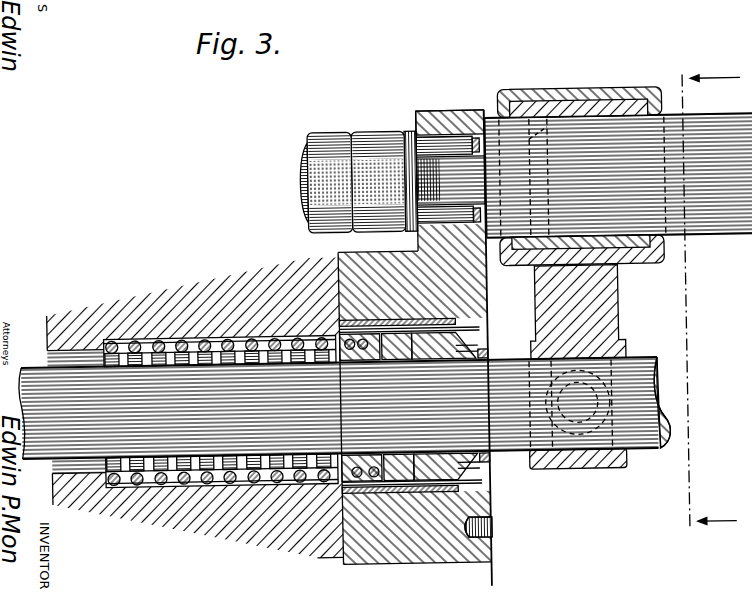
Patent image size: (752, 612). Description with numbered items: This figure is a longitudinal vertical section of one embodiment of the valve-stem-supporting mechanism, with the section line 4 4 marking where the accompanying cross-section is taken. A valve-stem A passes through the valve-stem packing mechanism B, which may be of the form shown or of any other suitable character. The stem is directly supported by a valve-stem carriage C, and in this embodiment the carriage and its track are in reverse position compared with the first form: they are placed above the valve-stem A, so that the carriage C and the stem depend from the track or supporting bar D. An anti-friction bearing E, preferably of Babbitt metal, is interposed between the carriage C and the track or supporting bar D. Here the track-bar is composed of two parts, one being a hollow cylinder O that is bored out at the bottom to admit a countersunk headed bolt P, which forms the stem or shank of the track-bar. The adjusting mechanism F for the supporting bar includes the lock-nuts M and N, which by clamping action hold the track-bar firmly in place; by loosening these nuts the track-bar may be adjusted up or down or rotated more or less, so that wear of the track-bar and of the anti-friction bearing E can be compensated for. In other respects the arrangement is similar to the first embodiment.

The valve-stem A is at (345, 408).
The valve-stem packing mechanism B is at (422, 362).
The valve-stem carriage C is at (586, 366).
The track or supporting bar D is at (618, 175).
The anti-friction bearing E is at (567, 106).
The adjusting mechanism F is at (421, 134).
The lock-nut M is at (377, 169).
The lock-nut N is at (326, 171).
The hollow cylinder O is at (582, 176).
The countersunk headed bolt P is at (450, 179).
The section line 4 4 is at (710, 302).